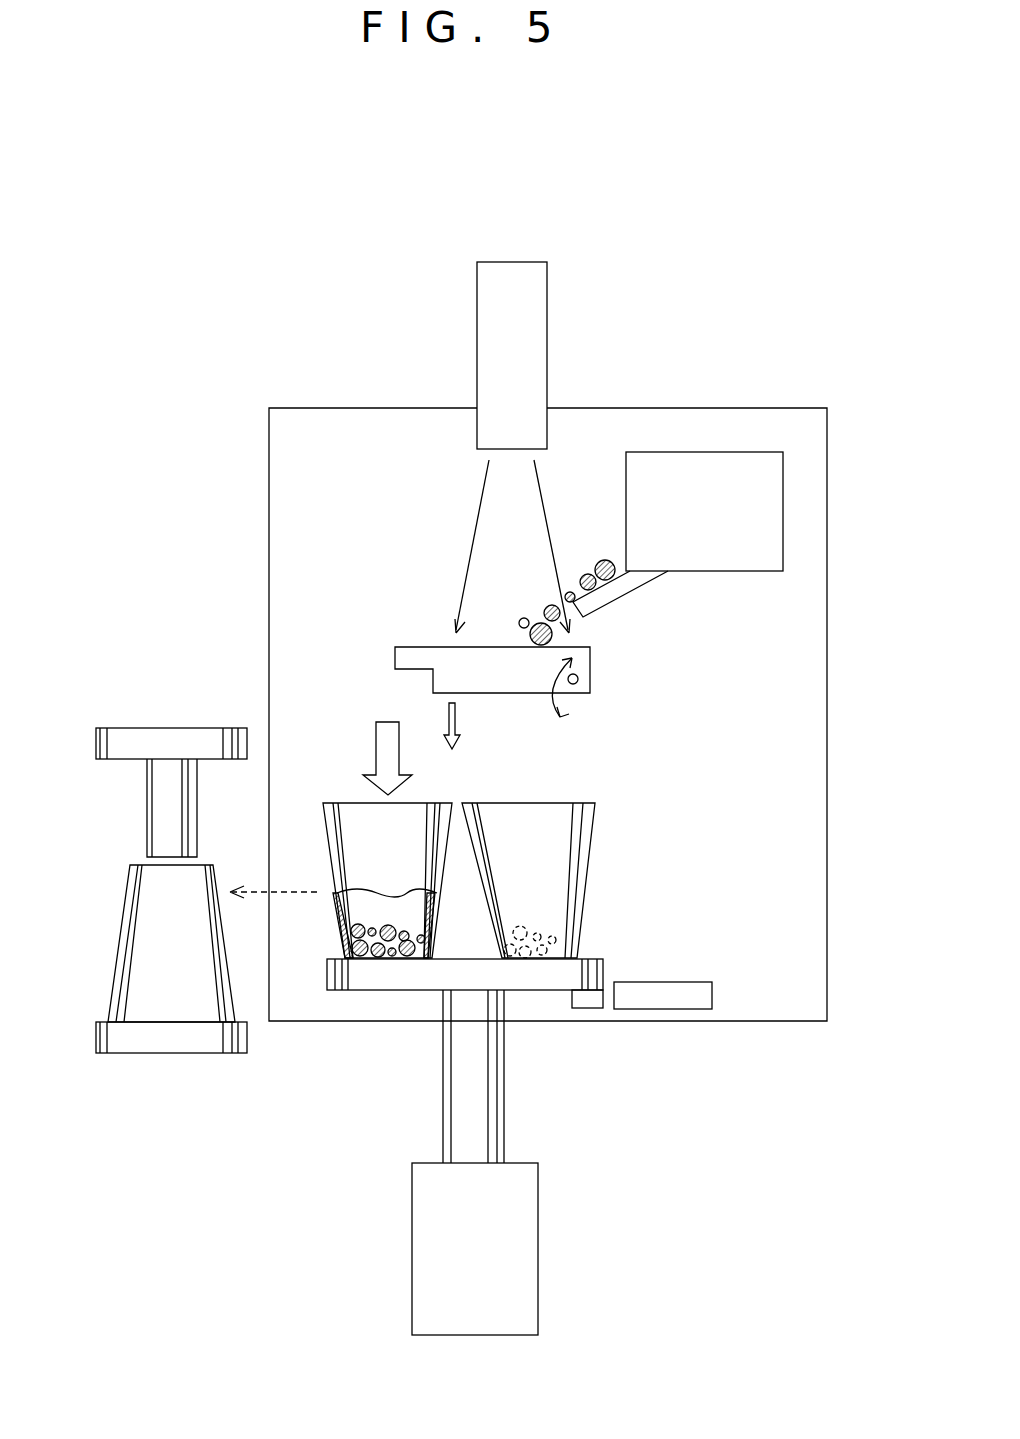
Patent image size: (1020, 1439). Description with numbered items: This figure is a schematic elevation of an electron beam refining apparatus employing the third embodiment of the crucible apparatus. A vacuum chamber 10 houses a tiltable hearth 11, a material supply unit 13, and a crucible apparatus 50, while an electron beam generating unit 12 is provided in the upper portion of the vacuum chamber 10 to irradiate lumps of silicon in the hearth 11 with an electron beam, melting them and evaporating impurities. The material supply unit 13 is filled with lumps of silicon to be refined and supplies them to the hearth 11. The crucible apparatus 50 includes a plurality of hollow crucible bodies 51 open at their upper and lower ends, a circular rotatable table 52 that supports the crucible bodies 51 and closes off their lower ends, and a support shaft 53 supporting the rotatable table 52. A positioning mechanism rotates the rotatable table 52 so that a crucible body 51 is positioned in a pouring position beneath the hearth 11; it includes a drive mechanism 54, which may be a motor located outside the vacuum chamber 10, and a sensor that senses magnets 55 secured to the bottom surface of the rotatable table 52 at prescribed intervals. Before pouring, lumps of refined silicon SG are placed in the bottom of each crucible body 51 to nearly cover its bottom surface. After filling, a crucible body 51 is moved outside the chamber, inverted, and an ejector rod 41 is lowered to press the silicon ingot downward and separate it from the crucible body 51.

The vacuum chamber 10 is at (341, 407).
The tiltable hearth 11 is at (413, 645).
The electron beam generating unit 12 is at (481, 341).
The material supply unit 13 is at (724, 570).
The ejector rod 41 is at (163, 817).
The crucible apparatus 50 is at (642, 792).
The crucible body 51 is at (353, 815).
The rotatable table 52 is at (607, 967).
The support shaft 53 is at (492, 1108).
The drive mechanism 54 is at (527, 1246).
The magnet 55 is at (588, 1006).
The lumps of refined silicon SG is at (380, 958).